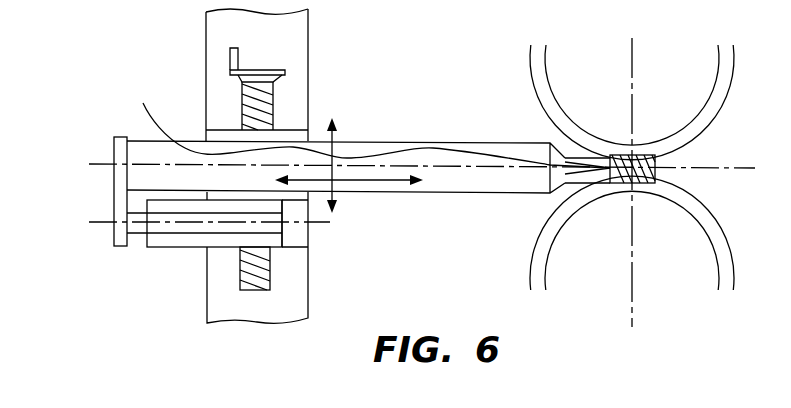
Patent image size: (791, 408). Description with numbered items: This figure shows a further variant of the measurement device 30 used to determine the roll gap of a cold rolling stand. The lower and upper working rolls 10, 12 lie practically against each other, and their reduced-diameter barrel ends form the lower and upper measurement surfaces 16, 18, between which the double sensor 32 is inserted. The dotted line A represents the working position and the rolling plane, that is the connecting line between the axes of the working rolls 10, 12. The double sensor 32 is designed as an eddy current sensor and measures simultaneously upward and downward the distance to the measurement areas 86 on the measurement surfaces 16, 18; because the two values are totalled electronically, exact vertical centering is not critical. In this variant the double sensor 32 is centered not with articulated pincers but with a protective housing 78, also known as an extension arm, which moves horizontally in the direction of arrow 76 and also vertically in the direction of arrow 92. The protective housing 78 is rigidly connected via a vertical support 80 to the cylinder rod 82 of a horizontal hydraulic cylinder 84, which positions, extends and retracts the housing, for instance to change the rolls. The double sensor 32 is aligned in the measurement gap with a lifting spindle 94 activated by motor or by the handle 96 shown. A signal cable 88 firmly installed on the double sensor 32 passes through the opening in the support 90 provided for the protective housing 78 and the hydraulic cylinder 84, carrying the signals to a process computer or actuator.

The lower working roll 10 is at (540, 265).
The upper working roll 12 is at (700, 84).
The lower measurement surface 16 is at (556, 255).
The upper measurement surface 18 is at (700, 132).
The measurement device 30 is at (513, 207).
The double sensor 32 is at (640, 184).
The arrow 76 is at (383, 183).
The protective housing 78 is at (135, 152).
The vertical support 80 is at (118, 200).
The cylinder rod 82 is at (202, 223).
The horizontal hydraulic cylinder 84 is at (219, 253).
The measurement areas 86 is at (631, 185).
The signal cable 88 is at (143, 103).
The support 90 is at (207, 93).
The arrow 92 is at (333, 135).
The lifting spindle 94 is at (247, 288).
The handle 96 is at (230, 63).
The working position A is at (632, 313).